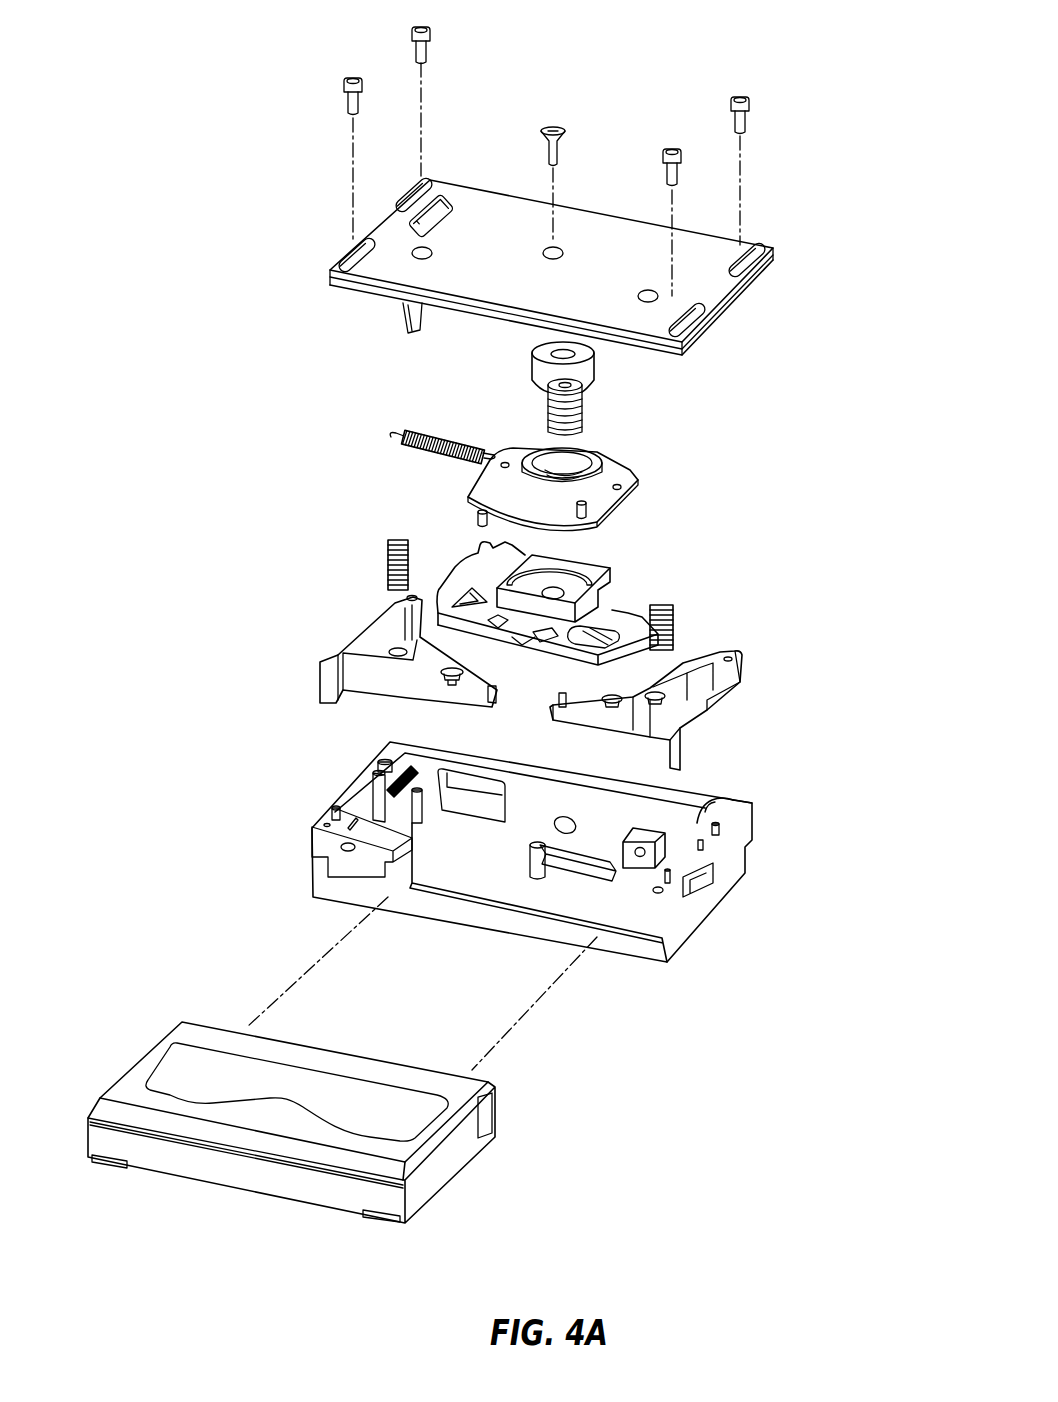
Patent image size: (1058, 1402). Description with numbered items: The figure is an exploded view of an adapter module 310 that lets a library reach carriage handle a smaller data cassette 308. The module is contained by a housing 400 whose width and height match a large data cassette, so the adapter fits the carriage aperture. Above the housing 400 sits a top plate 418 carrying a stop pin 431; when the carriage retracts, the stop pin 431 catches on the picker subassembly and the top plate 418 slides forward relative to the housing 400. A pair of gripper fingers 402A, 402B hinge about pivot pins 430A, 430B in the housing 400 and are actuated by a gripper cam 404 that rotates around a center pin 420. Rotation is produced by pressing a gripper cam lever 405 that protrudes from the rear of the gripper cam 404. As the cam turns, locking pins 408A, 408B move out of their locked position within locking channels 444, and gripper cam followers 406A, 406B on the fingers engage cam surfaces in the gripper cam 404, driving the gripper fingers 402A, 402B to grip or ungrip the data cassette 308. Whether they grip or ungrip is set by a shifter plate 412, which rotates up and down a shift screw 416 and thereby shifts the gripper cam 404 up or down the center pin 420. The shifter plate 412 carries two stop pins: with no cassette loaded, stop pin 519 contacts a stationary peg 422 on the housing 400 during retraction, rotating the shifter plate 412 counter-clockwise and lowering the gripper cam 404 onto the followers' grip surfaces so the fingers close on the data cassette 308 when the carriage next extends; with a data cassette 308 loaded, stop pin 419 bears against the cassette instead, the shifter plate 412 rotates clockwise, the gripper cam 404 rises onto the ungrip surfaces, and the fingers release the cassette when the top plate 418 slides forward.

The adapter module 310 is at (893, 100).
The top plate 418 is at (602, 226).
The stop pin 431 is at (407, 332).
The shift screw 416 is at (595, 413).
The shifter plate 412 is at (624, 475).
The stop pin 419 is at (476, 522).
The stop pin 519 is at (614, 502).
The gripper cam lever 405 is at (500, 545).
The locking channels 444 is at (522, 645).
The gripper cam 404 is at (618, 590).
The gripper finger 402B is at (337, 655).
The gripper cam follower 406B is at (450, 682).
The locking pin 408B is at (490, 700).
The gripper finger 402A is at (735, 678).
The gripper cam follower 406A is at (613, 707).
The locking pin 408A is at (562, 708).
The housing 400 is at (735, 852).
The pivot pin 430A is at (712, 800).
The pivot pin 430B is at (418, 805).
The center pin 420 is at (535, 872).
The stationary peg 422 is at (565, 873).
The data cassette 308 is at (447, 1162).